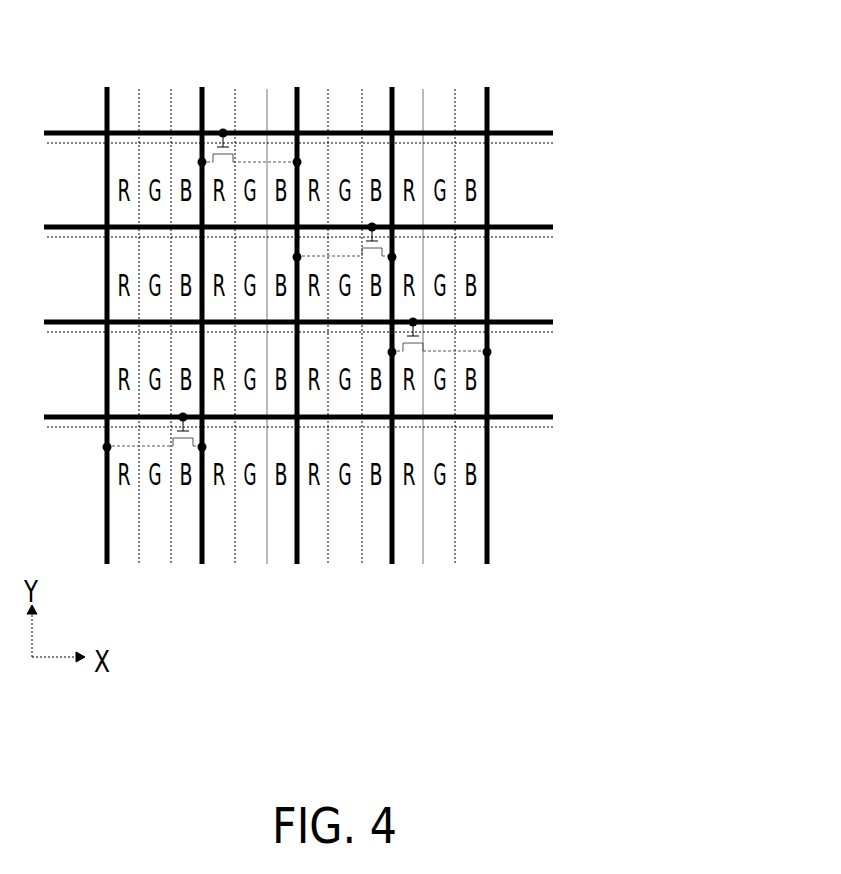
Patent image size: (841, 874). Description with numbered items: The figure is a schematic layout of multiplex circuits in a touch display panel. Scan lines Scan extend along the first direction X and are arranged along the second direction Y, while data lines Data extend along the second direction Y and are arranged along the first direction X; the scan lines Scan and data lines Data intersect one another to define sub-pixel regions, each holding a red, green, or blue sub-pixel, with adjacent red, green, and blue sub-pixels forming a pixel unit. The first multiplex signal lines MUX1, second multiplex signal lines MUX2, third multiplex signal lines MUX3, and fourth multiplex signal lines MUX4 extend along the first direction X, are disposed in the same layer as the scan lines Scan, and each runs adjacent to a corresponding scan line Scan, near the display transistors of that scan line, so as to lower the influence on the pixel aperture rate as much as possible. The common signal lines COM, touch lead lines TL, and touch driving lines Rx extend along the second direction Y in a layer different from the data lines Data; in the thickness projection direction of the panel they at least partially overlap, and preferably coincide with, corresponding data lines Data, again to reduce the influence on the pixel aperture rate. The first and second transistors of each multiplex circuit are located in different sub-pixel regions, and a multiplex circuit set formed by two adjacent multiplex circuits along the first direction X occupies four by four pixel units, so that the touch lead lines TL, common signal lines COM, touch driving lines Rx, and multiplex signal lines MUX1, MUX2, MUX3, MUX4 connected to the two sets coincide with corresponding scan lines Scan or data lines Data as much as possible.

The data lines Data is at (142, 100).
The scan lines Scan is at (75, 143).
The first multiplex signal lines MUX1 is at (548, 128).
The second multiplex signal lines MUX2 is at (548, 222).
The third multiplex signal lines MUX3 is at (548, 412).
The fourth multiplex signal lines MUX4 is at (548, 318).
The common signal lines COM is at (305, 348).
The touch lead lines TL is at (299, 348).
The touch driving lines Rx is at (295, 348).